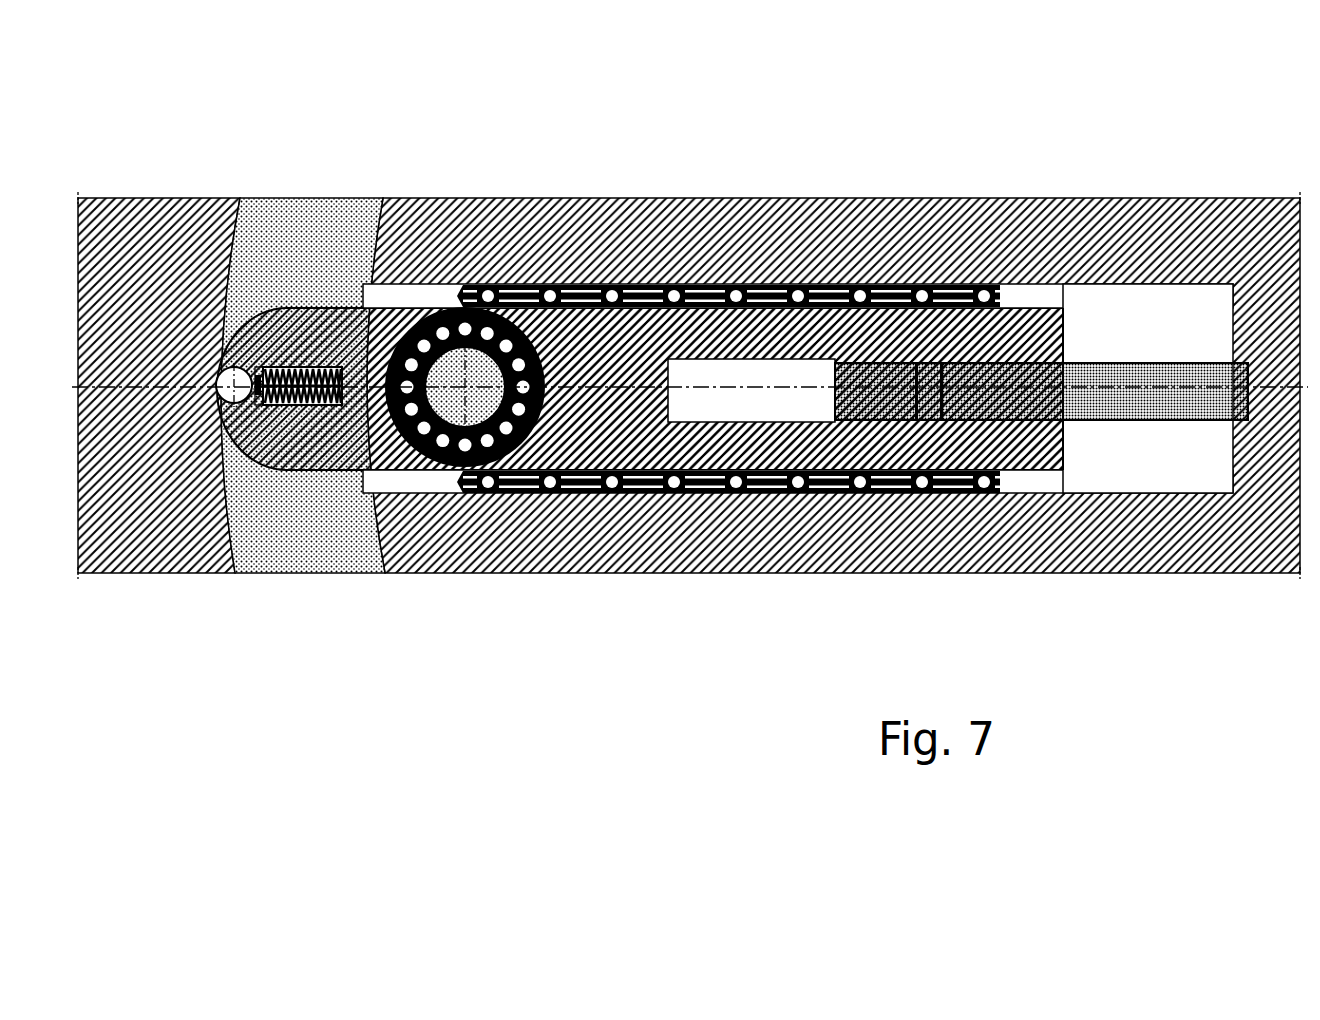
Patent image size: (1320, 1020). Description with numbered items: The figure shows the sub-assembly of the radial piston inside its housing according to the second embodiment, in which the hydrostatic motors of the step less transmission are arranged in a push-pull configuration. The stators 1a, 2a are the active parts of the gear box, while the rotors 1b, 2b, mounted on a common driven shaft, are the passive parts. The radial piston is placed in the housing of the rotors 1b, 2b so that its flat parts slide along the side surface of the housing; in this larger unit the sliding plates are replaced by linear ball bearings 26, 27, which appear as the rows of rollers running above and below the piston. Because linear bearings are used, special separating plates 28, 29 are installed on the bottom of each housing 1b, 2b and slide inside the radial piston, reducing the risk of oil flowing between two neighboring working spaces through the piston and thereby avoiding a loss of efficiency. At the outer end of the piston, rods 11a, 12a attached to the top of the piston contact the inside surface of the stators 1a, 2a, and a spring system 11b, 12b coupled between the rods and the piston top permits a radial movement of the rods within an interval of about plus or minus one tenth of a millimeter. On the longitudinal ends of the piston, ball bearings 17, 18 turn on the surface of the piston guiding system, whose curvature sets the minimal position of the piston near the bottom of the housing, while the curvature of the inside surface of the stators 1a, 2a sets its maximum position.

The stator 1a is at (137, 277).
The stator 2a is at (287, 315).
The rod 11a is at (227, 366).
The rod 12a is at (370, 231).
The ball bearing 17 is at (455, 318).
The ball bearing 18 is at (552, 245).
The linear ball bearing 26 is at (680, 290).
The linear ball bearing 27 is at (728, 275).
The rotor 1b is at (882, 240).
The rotor 2b is at (798, 277).
The separating plate 28 is at (1078, 377).
The separating plate 29 is at (981, 242).
The spring system 11b is at (333, 407).
The spring system 12b is at (289, 560).